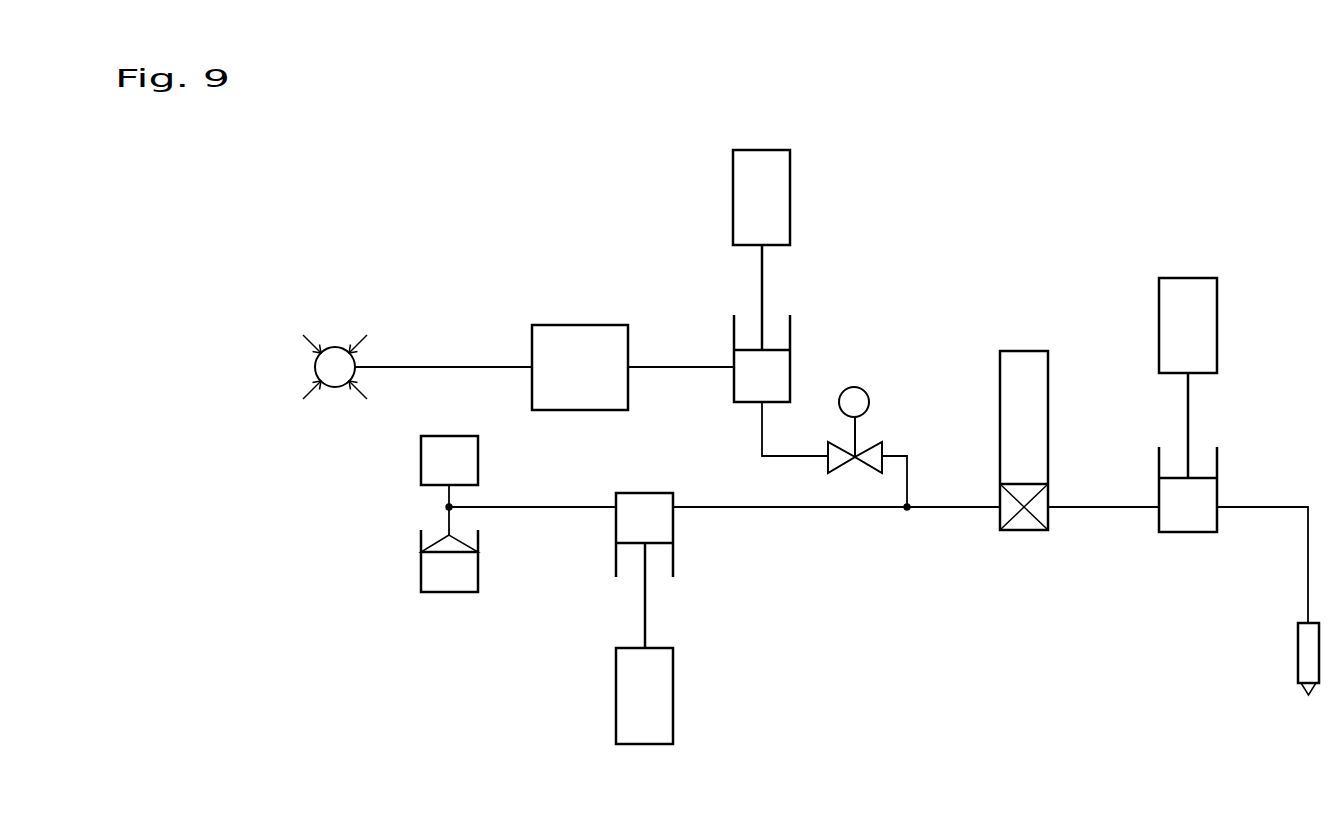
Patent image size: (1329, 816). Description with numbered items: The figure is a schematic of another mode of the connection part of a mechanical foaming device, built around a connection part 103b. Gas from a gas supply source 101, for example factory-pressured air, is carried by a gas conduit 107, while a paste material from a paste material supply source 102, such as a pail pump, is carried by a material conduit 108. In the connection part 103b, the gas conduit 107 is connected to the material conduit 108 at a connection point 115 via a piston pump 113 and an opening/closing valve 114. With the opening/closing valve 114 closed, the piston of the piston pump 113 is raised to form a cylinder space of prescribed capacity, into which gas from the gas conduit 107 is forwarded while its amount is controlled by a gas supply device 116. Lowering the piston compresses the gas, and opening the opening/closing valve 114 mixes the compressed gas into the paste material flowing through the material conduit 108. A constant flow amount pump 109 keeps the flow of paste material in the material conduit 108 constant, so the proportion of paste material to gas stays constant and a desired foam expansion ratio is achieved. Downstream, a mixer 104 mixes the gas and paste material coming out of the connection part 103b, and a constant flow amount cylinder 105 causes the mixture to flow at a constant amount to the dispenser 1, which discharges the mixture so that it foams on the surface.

The dispenser 1 is at (1298, 655).
The gas supply source 101 is at (348, 347).
The paste material supply source 102 is at (421, 570).
The connection part 103b is at (706, 284).
The mixer 104 is at (1033, 351).
The constant flow amount cylinder 105 is at (1193, 278).
The gas conduit 107 is at (425, 366).
The material conduit 108 is at (780, 508).
The constant flow amount pump 109 is at (660, 744).
The piston pump 113 is at (790, 175).
The opening/closing valve 114 is at (858, 386).
The connection point 115 is at (907, 508).
The gas supply device 116 is at (570, 325).